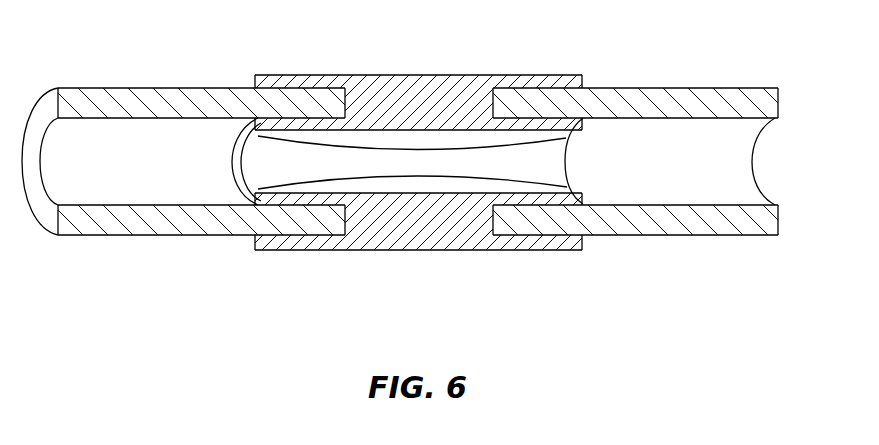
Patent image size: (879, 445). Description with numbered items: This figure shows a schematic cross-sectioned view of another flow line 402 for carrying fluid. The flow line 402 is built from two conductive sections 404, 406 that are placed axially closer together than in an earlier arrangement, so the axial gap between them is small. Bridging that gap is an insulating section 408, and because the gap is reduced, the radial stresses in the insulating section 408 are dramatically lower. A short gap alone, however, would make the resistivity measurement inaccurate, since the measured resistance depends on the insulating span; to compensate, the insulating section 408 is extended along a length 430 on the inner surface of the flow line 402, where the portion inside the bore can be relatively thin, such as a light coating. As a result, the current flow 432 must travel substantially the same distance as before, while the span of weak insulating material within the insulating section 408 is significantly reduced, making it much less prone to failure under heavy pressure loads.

The flow line 402 is at (605, 161).
The conductive section 404 is at (745, 89).
The conductive section 406 is at (133, 88).
The insulating section 408 is at (463, 75).
The length 430 is at (579, 285).
The current flow 432 is at (232, 164).